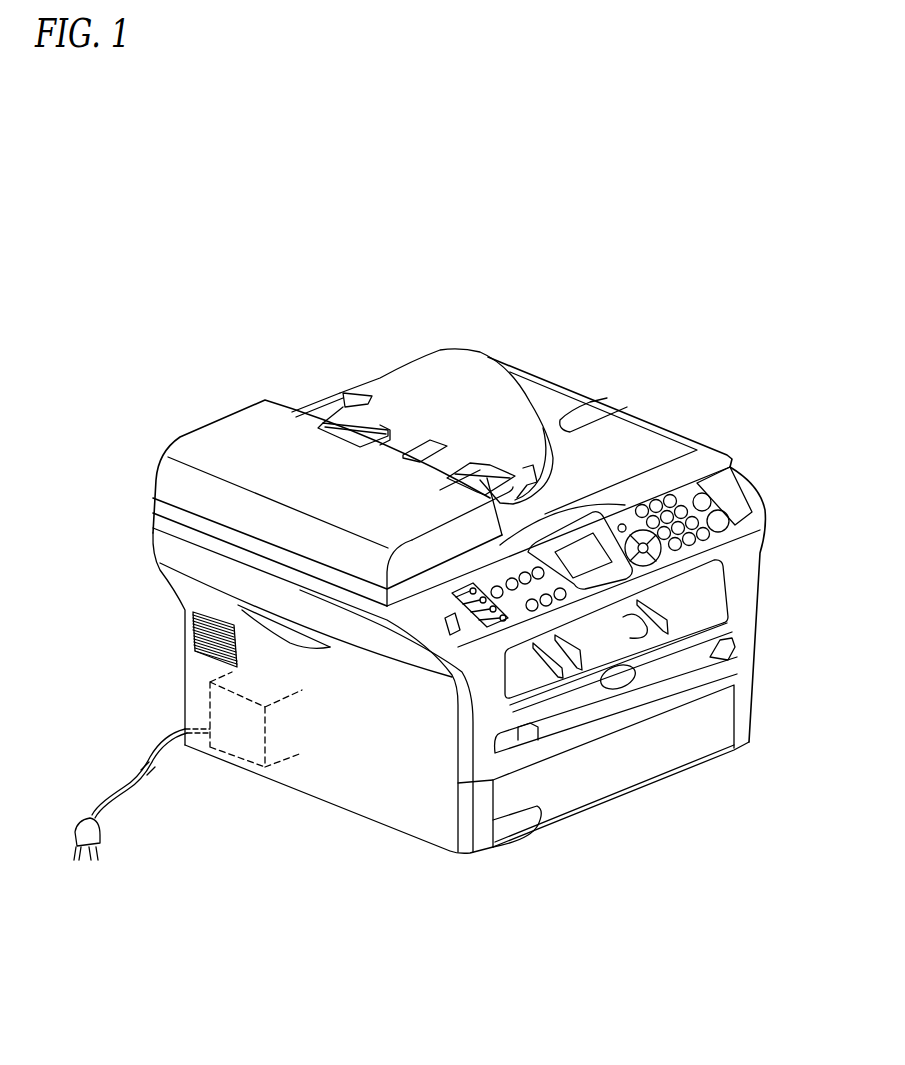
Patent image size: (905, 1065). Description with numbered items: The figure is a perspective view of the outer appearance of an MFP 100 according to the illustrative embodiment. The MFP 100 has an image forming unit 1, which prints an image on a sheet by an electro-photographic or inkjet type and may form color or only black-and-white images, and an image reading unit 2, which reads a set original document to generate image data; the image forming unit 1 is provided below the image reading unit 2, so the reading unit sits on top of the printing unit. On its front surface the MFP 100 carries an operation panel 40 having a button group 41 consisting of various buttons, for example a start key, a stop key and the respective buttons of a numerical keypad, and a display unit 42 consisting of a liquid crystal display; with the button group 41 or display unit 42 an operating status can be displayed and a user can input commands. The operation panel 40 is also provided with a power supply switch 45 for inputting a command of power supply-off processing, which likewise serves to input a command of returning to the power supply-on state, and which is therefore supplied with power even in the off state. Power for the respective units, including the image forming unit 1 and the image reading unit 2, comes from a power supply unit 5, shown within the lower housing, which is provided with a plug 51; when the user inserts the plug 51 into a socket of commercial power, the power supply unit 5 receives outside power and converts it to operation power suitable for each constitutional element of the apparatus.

The MFP 100 is at (535, 328).
The image forming unit 1 is at (370, 787).
The image reading unit 2 is at (223, 442).
The power supply unit 5 is at (242, 747).
The plug 51 is at (97, 833).
The operation panel 40 is at (734, 825).
The button group 41 is at (692, 545).
The display unit 42 is at (580, 560).
The power supply switch 45 is at (718, 513).